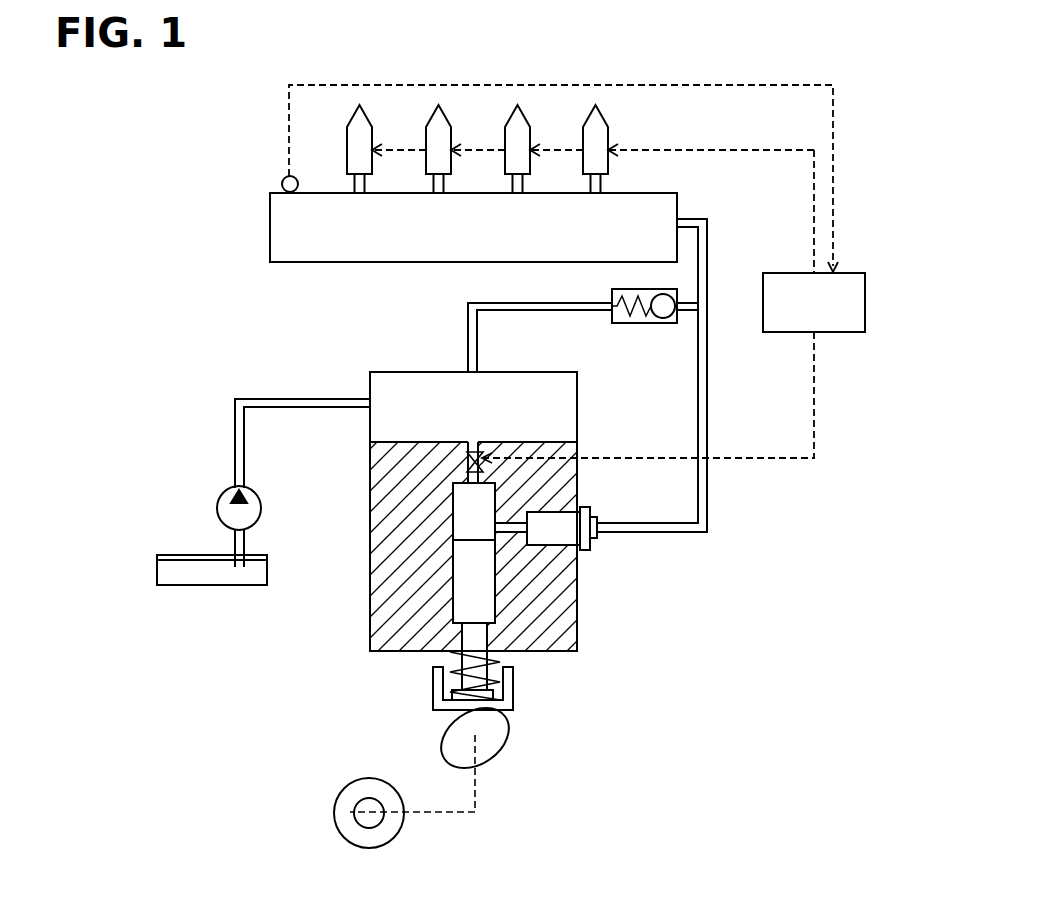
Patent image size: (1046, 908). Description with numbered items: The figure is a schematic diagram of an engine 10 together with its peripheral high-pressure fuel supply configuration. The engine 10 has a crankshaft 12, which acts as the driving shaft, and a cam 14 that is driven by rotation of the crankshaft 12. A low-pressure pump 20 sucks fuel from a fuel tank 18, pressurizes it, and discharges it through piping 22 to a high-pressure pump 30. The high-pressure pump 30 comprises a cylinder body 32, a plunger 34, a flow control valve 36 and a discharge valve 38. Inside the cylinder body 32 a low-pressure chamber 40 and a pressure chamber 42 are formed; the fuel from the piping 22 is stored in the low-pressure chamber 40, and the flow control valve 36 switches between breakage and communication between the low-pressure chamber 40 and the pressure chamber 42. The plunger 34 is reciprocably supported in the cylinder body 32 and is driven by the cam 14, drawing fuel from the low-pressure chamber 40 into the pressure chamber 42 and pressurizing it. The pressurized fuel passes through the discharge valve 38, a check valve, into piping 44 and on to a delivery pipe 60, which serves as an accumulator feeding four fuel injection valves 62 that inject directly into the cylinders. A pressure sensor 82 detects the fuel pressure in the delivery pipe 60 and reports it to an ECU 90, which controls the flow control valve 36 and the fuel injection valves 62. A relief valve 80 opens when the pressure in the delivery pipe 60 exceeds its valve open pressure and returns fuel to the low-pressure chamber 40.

The engine 10 is at (850, 119).
The crankshaft 12 is at (352, 782).
The cam 14 is at (510, 736).
The fuel tank 18 is at (198, 588).
The low-pressure pump 20 is at (219, 504).
The piping 22 is at (278, 397).
The high-pressure pump 30 is at (333, 360).
The cylinder body 32 is at (578, 401).
The plunger 34 is at (467, 578).
The flow control valve 36 is at (469, 456).
The discharge valve 38 is at (590, 546).
The low-pressure chamber 40 is at (401, 382).
The pressure chamber 42 is at (457, 522).
The piping 44 is at (708, 384).
The delivery pipe 60 is at (270, 229).
The fuel injection valve 62 is at (426, 137).
The relief valve 80 is at (645, 324).
The pressure sensor 82 is at (285, 180).
The ECU 90 is at (856, 272).